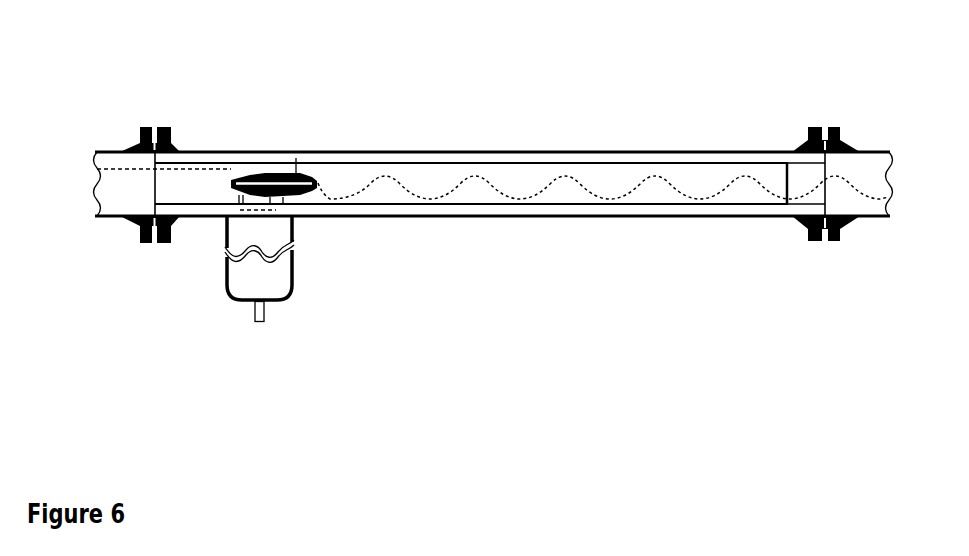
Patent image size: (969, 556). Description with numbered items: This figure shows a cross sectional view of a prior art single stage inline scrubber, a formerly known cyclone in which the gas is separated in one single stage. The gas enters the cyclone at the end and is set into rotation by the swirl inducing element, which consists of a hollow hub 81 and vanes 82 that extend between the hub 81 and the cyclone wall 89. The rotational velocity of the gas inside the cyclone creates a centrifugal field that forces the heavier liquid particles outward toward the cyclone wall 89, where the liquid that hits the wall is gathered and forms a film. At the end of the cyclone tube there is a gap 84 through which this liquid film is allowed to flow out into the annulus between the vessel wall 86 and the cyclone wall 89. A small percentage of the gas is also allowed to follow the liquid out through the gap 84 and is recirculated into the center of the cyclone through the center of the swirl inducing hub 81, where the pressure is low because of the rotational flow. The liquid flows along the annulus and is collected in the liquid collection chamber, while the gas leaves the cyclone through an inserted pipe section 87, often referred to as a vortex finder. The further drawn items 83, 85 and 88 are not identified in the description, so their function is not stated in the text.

The hollow hub 81 is at (298, 158).
The vanes 82 is at (282, 173).
The inlet pipe section 83 is at (115, 193).
The gap 84 is at (792, 206).
The outlet pipe section 85 is at (847, 195).
The vessel wall 86 is at (499, 152).
The inserted pipe section 87 is at (796, 163).
The branch outlet 88 is at (280, 268).
The cyclone wall 89 is at (389, 166).